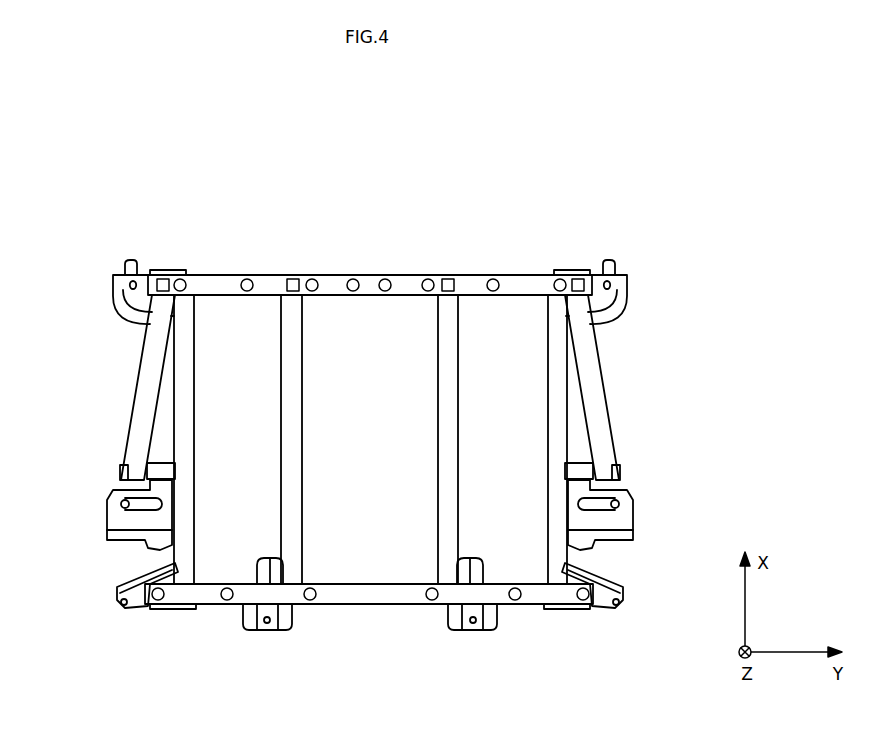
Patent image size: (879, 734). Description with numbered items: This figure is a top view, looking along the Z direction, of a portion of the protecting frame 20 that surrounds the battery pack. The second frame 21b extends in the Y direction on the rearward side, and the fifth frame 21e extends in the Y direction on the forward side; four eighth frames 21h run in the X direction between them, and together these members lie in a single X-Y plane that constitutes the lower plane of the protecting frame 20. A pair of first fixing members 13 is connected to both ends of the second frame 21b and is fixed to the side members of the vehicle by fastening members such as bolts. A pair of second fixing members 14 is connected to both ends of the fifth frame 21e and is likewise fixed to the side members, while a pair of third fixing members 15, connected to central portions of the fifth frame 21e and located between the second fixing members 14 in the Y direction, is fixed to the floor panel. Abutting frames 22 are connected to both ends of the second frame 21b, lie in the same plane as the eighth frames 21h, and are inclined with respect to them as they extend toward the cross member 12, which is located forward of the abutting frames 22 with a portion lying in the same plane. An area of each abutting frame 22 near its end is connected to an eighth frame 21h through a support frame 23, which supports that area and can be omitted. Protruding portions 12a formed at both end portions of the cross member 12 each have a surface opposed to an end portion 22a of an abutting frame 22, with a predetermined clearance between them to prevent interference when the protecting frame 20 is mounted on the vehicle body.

The protecting frame 20 is at (380, 270).
The second frame 21b is at (472, 285).
The eighth frames 21h is at (187, 393).
The fifth frame 21e is at (362, 593).
The abutting frames 22 is at (147, 392).
The end portion 22a is at (126, 477).
The support frame 23 is at (160, 468).
The protruding portions 12a is at (113, 491).
The cross member 12 is at (368, 513).
The first fixing members 13 is at (130, 296).
The second fixing members 14 is at (130, 606).
The third fixing members 15 is at (265, 613).